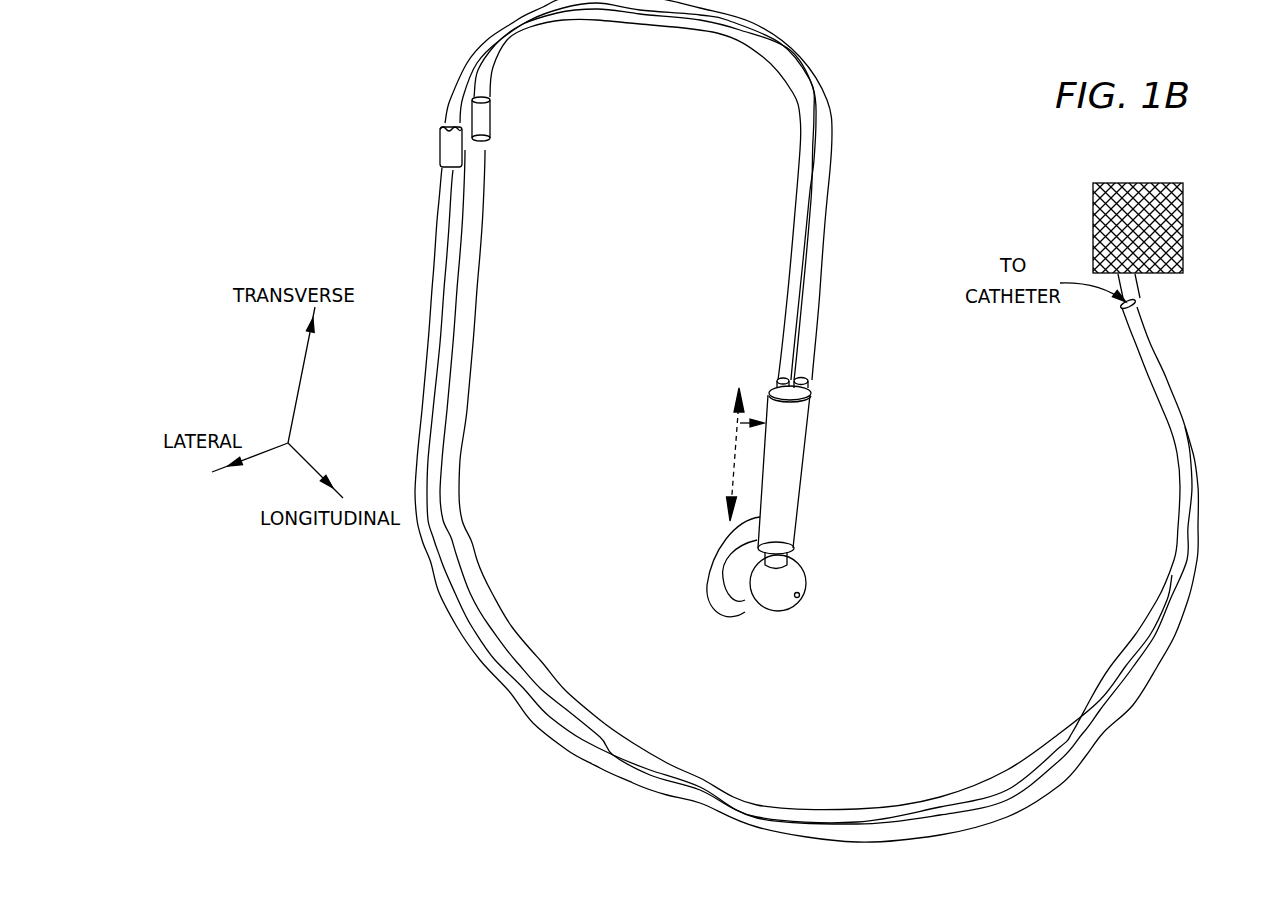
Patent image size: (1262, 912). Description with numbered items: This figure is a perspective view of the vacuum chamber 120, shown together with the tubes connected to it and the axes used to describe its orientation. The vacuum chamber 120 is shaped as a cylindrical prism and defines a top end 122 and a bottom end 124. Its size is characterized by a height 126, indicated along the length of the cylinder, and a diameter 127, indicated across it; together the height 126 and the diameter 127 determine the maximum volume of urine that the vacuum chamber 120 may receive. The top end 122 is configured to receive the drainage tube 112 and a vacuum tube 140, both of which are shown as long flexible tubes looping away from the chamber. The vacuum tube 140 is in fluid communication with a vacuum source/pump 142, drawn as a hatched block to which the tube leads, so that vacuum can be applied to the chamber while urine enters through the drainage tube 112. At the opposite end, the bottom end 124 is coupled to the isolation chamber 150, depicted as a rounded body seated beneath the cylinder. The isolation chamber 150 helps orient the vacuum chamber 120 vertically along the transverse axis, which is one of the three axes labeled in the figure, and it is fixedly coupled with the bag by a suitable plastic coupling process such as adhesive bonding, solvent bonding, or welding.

The drainage tube 112 is at (811, 260).
The vacuum tube 140 is at (790, 322).
The vacuum source/pump 142 is at (1185, 228).
The top end 122 is at (834, 381).
The diameter 127 is at (829, 425).
The vacuum chamber 120 is at (797, 490).
The height 126 is at (735, 455).
The bottom end 124 is at (819, 550).
The isolation chamber 150 is at (775, 597).